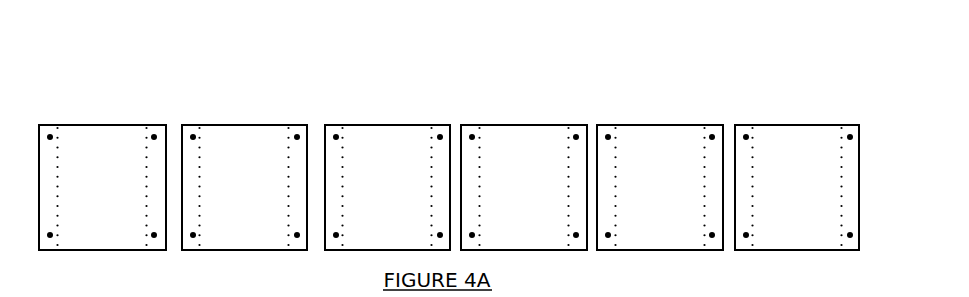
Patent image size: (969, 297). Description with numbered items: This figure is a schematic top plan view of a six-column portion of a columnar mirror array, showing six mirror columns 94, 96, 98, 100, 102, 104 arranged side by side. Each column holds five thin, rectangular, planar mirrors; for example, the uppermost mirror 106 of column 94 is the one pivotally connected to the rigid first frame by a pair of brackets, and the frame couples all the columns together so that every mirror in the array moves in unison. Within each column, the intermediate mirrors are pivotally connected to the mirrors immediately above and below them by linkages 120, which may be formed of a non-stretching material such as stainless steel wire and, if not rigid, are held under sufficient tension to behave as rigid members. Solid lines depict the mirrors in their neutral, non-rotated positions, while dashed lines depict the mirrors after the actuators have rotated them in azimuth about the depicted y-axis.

The first mirror column 94 is at (108, 86).
The second mirror column 96 is at (245, 86).
The third mirror column 98 is at (387, 86).
The fourth mirror column 100 is at (519, 86).
The fifth mirror column 102 is at (652, 86).
The sixth mirror column 104 is at (790, 86).
The mirror 106 is at (93, 251).
The linkages 120 is at (50, 134).